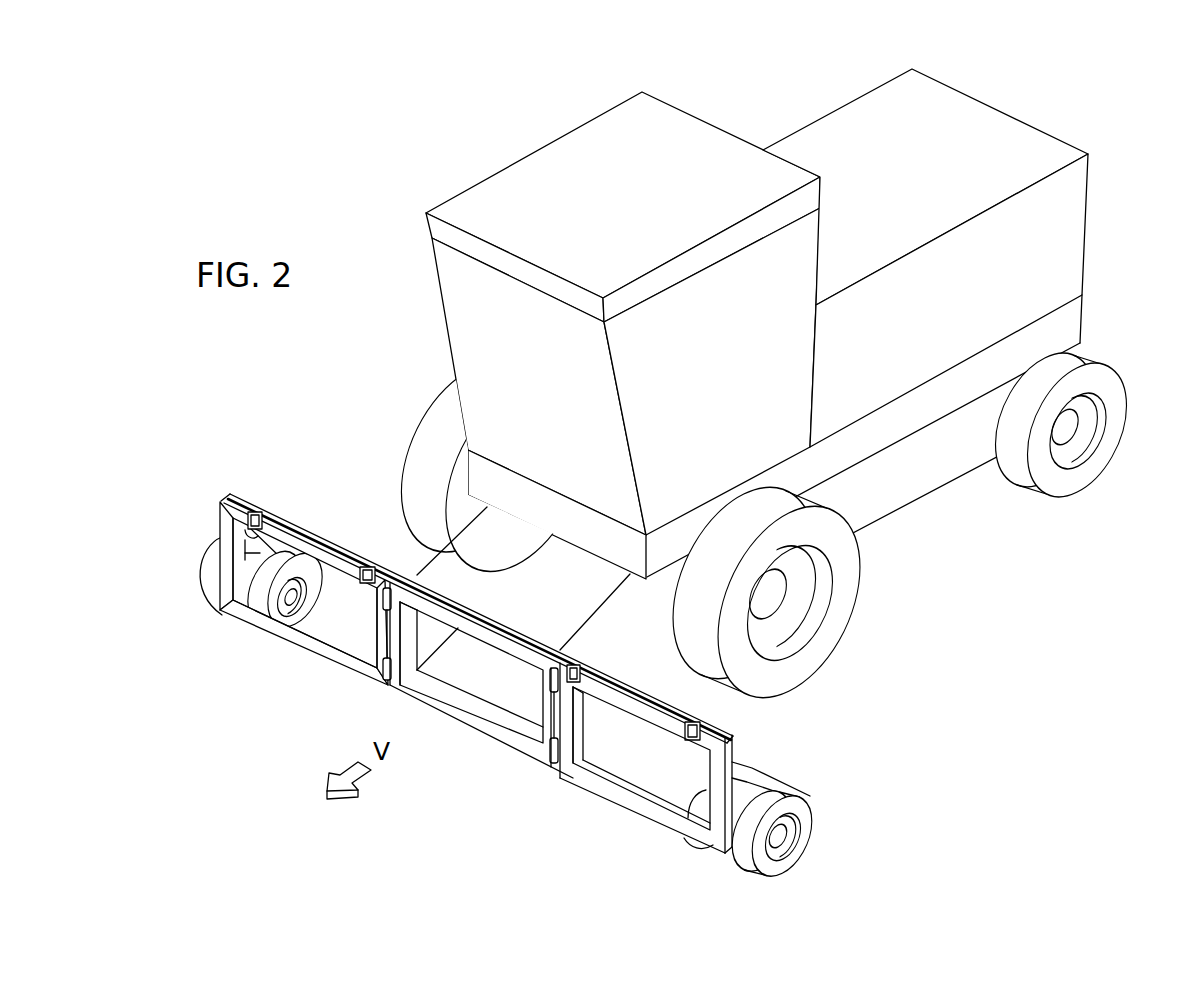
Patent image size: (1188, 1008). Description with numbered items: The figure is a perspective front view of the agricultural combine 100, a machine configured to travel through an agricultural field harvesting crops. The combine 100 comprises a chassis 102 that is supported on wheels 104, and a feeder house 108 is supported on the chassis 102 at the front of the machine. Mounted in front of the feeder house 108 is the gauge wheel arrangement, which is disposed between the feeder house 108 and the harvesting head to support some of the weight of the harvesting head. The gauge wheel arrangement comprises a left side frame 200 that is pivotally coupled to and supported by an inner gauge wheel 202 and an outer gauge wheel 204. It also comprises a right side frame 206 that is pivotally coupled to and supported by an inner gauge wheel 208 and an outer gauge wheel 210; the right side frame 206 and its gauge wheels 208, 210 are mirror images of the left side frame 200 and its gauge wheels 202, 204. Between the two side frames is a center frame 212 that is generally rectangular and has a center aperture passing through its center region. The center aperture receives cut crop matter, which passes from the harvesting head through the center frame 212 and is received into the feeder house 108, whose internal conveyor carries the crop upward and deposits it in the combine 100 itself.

The agricultural combine 100 is at (452, 137).
The chassis 102 is at (883, 478).
The wheels 104 is at (422, 457).
The feeder house 108 is at (537, 610).
The left side frame 200 is at (612, 792).
The inner gauge wheel 202 is at (702, 797).
The outer gauge wheel 204 is at (787, 793).
The right side frame 206 is at (312, 645).
The inner gauge wheel 208 is at (316, 585).
The outer gauge wheel 210 is at (205, 585).
The center frame 212 is at (460, 717).